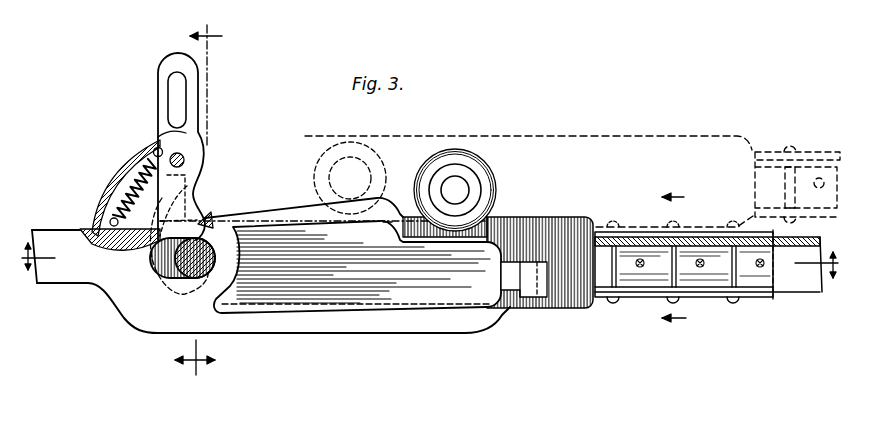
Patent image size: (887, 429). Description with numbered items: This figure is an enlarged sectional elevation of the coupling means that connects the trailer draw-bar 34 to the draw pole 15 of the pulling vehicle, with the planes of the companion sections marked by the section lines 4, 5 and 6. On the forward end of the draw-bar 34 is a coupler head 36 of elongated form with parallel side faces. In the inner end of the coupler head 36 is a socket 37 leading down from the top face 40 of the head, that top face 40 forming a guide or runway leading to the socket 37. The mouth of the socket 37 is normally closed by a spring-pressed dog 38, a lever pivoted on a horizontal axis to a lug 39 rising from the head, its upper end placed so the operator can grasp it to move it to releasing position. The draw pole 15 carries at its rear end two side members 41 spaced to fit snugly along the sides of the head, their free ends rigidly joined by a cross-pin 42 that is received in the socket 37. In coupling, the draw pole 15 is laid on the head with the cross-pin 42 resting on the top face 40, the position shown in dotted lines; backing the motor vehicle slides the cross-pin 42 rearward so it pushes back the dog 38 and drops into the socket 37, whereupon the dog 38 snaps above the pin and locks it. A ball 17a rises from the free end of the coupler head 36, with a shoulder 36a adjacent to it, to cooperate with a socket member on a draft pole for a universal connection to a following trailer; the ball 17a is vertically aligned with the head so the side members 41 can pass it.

The section line 4— 4 is at (430, 277).
The section line 5— 5 is at (198, 202).
The section line 6— 6 is at (674, 260).
The draw pole 15 is at (810, 166).
The ball 17a is at (473, 183).
The draw-bar 34 is at (52, 273).
The coupler head 36 is at (359, 300).
The shoulder 36a is at (397, 210).
The socket 37 is at (150, 272).
The spring-pressed dog 38 is at (163, 90).
The lug 39 is at (128, 167).
The top face 40 is at (276, 215).
The side members 41 is at (633, 130).
The cross-pin 42 is at (350, 160).